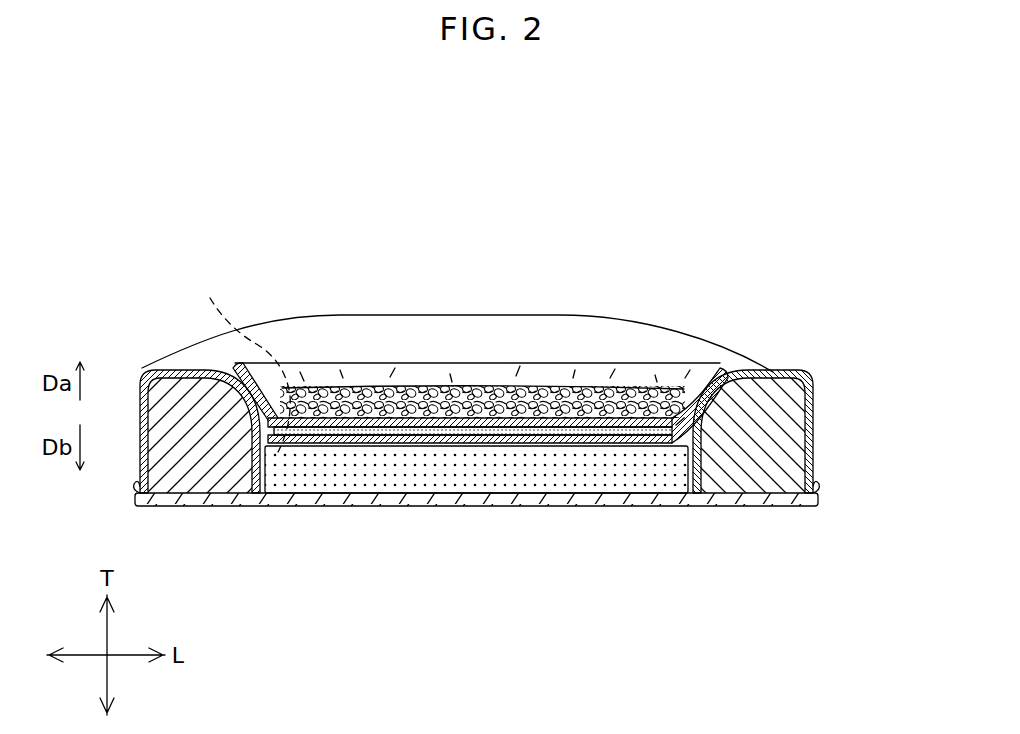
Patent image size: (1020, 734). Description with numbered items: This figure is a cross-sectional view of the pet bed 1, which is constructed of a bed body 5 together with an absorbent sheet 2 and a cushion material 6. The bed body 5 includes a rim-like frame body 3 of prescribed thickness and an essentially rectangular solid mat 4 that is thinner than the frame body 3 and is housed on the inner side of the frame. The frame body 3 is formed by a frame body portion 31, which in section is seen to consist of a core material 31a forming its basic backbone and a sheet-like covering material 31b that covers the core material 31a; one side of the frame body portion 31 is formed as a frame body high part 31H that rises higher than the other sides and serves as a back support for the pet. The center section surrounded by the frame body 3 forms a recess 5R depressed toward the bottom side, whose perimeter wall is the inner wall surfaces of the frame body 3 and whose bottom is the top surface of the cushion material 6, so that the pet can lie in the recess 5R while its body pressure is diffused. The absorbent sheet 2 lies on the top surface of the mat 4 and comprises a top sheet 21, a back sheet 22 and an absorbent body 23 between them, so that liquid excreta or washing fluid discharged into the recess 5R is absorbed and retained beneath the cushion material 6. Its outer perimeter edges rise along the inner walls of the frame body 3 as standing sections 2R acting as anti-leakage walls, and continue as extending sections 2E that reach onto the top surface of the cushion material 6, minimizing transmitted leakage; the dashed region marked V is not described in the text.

The pet bed 1 is at (745, 210).
The absorbent sheet 2 is at (509, 446).
The top sheet 21 is at (612, 422).
The back sheet 22 is at (512, 440).
The absorbent body 23 is at (570, 428).
The standing section 2R is at (688, 370).
The extending section 2E is at (702, 363).
The frame body 3 is at (534, 467).
The frame body portion 31 is at (534, 430).
The core material 31a is at (897, 393).
The covering material 31b is at (811, 405).
The frame body high part 31H is at (308, 310).
The mat 4 is at (690, 500).
The bed body 5 is at (805, 576).
The recess 5R is at (512, 356).
The cushion material 6 is at (377, 387).
The void region V is at (245, 365).